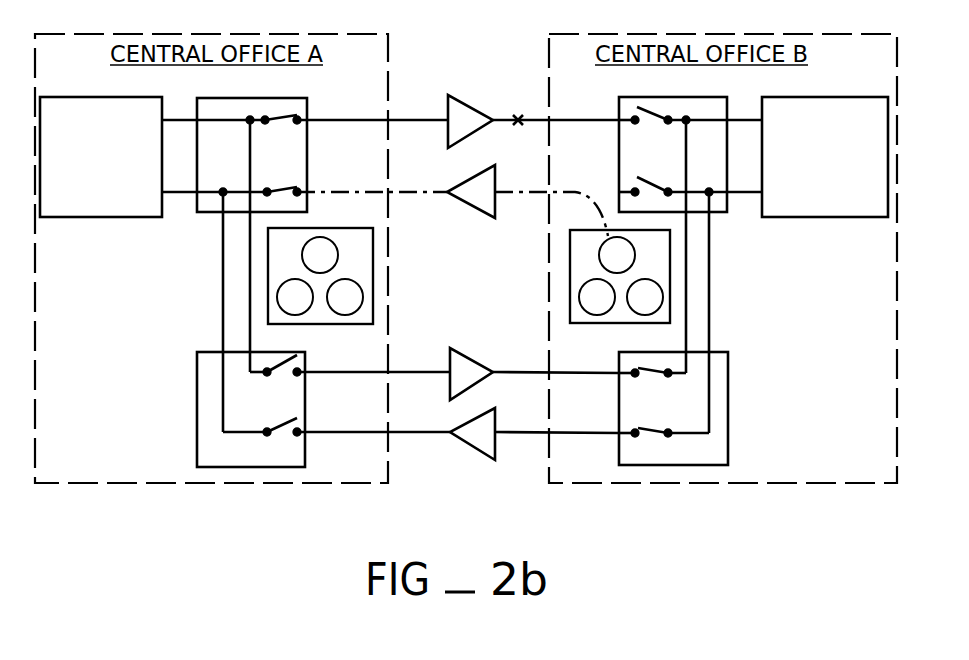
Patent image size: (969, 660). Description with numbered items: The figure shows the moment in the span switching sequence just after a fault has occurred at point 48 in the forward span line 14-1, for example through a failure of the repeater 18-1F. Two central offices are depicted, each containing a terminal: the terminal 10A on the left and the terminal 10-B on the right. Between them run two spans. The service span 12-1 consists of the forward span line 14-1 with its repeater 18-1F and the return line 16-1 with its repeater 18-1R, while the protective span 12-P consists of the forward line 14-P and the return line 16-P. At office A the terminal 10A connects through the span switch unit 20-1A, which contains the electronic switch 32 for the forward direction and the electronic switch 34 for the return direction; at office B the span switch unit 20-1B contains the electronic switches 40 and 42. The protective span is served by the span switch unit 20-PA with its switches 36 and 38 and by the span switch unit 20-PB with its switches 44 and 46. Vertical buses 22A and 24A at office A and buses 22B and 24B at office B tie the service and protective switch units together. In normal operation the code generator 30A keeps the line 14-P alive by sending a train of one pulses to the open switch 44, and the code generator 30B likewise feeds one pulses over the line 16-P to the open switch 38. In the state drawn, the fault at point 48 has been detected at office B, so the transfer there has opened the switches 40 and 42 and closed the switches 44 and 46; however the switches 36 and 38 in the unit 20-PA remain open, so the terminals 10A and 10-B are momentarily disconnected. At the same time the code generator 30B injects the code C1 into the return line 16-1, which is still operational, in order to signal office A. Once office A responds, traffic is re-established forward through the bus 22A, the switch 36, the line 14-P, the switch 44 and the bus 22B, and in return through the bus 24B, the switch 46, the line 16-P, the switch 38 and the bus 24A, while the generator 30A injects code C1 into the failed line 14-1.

The terminal 10A is at (112, 98).
The terminal 10-B is at (842, 96).
The span switch unit 20-1A is at (256, 138).
The span switch unit 20-1B is at (662, 138).
The span switch unit 20-PA is at (272, 429).
The span switch unit 20-PB is at (647, 430).
The service span 12-1 is at (458, 159).
The protective span 12-P is at (458, 394).
The forward span line 14-1 is at (412, 120).
The return line 16-1 is at (435, 194).
The forward line 14-P is at (410, 372).
The return line 16-P is at (393, 437).
The repeater 18-1F is at (460, 116).
The repeater 18-1R is at (492, 216).
The bus 22A is at (250, 255).
The bus 24A is at (223, 291).
The bus 22B is at (687, 242).
The bus 24B is at (710, 278).
The code generator 30A is at (373, 278).
The code generator 30B is at (580, 275).
The electronic switch 32 is at (290, 114).
The electronic switch 34 is at (282, 170).
The electronic switch 36 is at (292, 355).
The electronic switch 38 is at (282, 426).
The electronic switch 40 is at (638, 109).
The electronic switch 42 is at (617, 170).
The electronic switch 44 is at (643, 367).
The electronic switch 46 is at (642, 427).
The fault point 48 is at (518, 117).